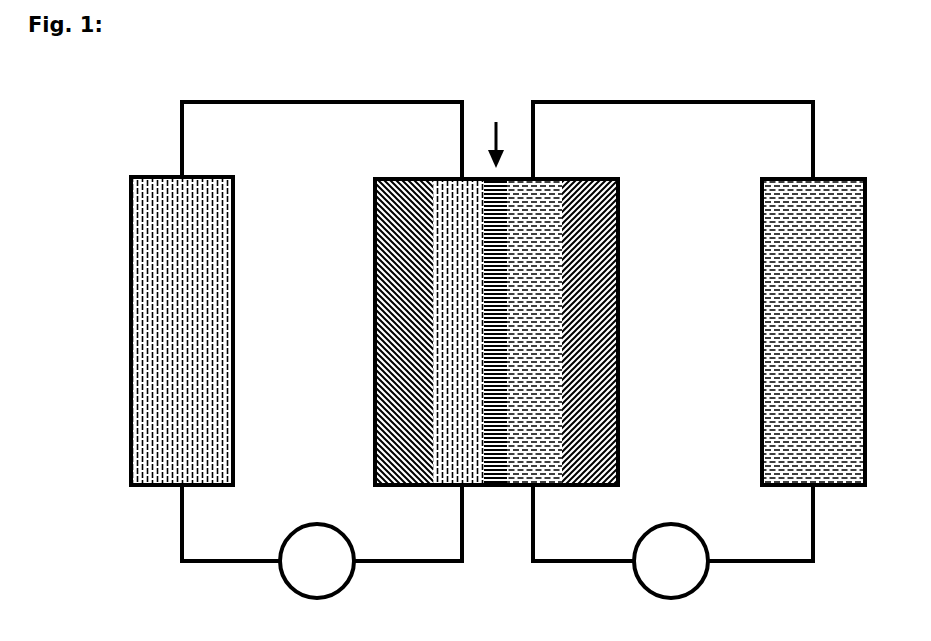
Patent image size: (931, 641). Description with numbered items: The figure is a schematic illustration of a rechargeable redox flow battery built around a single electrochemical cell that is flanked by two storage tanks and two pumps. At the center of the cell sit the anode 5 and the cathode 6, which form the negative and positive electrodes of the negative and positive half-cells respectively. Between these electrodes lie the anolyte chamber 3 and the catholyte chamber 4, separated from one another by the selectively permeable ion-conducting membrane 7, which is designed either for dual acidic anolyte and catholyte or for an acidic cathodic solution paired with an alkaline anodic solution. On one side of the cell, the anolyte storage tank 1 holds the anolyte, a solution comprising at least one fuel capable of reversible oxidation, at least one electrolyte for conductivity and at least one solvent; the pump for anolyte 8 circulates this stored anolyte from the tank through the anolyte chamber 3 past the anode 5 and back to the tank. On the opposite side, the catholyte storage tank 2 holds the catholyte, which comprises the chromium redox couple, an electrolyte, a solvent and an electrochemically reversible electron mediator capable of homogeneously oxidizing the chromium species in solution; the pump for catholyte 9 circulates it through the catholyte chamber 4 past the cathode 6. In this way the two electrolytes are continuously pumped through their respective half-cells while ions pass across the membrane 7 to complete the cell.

The anolyte storage tank 1 is at (182, 331).
The catholyte storage tank 2 is at (813, 332).
The anolyte chamber 3 is at (458, 332).
The catholyte chamber 4 is at (534, 332).
The anode 5 is at (404, 332).
The cathode 6 is at (590, 332).
The selectively permeable ion-conducting membrane 7 is at (496, 124).
The pump for anolyte 8 is at (317, 561).
The pump for catholyte 9 is at (671, 561).